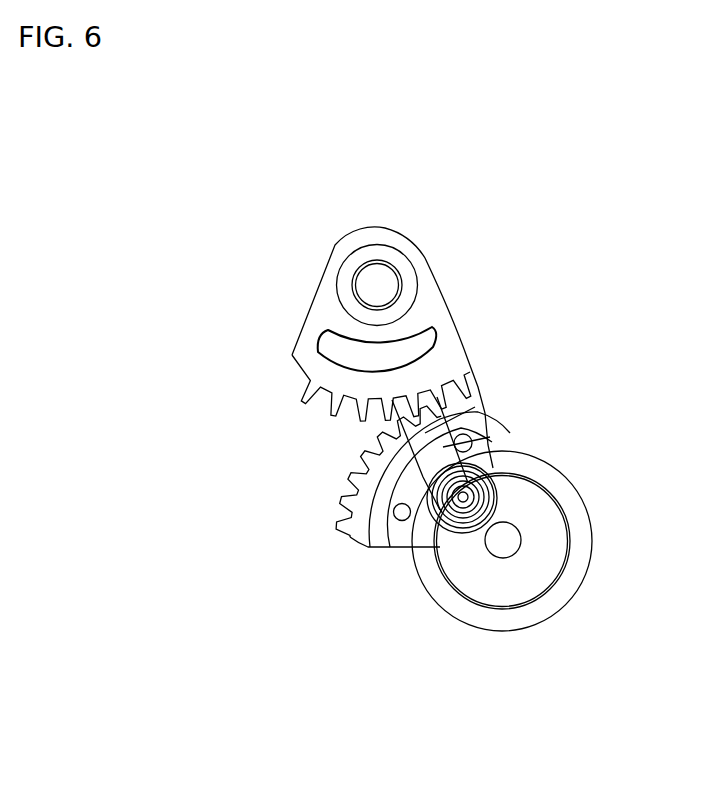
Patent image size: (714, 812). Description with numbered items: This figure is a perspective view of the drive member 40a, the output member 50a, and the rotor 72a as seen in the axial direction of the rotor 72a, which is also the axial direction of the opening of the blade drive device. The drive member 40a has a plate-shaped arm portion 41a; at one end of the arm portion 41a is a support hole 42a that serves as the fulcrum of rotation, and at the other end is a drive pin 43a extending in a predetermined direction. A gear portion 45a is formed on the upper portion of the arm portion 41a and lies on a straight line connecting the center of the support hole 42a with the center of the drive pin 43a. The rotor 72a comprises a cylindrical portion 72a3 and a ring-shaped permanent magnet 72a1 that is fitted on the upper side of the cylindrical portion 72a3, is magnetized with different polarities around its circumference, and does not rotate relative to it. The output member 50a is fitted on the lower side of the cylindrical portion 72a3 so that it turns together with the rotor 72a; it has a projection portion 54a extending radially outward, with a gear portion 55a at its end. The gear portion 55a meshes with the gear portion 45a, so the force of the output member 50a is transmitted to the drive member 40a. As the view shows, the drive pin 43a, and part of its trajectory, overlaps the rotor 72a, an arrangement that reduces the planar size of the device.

The drive member 40a is at (305, 305).
The arm portion 41a is at (458, 367).
The support hole 42a is at (376, 270).
The drive pin 43a is at (490, 457).
The gear portion 45a is at (316, 368).
The output member 50a is at (366, 542).
The projection portion 54a is at (390, 547).
The gear portion 55a is at (346, 497).
The rotor 72a is at (515, 604).
The permanent magnet 72a1 is at (513, 618).
The cylindrical portion 72a3 is at (533, 552).